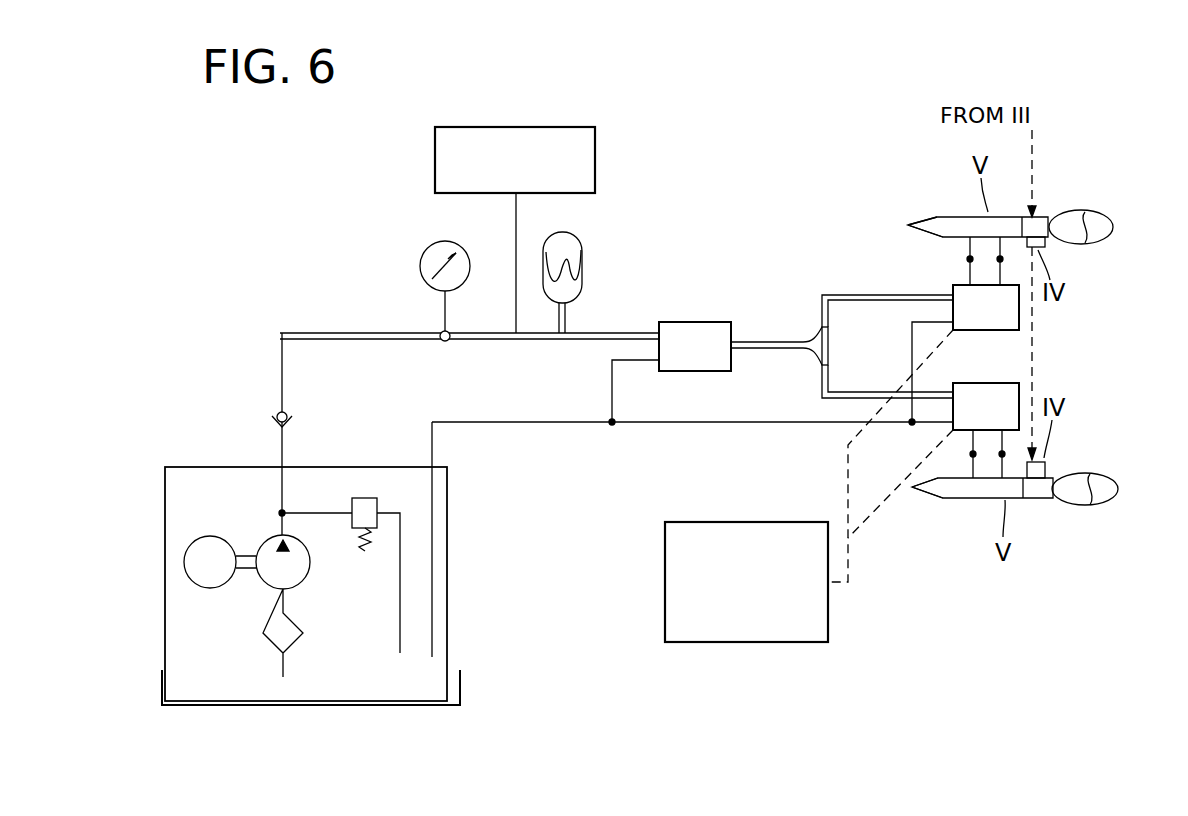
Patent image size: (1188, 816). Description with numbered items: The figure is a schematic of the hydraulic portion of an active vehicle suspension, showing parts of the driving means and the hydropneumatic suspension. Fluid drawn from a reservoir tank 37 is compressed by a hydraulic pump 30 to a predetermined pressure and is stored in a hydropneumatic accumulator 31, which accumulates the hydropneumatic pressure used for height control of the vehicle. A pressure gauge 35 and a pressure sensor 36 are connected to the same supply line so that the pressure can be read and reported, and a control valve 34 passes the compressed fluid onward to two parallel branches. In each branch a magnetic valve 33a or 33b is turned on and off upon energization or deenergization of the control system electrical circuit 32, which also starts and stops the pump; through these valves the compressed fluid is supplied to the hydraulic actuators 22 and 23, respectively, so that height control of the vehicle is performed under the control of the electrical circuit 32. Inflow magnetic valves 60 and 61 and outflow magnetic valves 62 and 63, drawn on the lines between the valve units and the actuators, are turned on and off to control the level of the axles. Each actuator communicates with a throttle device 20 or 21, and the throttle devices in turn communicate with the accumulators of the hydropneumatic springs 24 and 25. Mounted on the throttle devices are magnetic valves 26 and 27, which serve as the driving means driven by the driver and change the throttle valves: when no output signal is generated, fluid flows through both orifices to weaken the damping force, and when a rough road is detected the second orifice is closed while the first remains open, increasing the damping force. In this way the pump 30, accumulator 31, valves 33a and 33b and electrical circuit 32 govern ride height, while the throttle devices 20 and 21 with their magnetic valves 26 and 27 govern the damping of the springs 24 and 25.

The throttle device 20 is at (1050, 225).
The throttle device 21 is at (1060, 500).
The hydraulic actuator 22 is at (950, 217).
The hydraulic actuator 23 is at (965, 498).
The hydropneumatic spring 24 is at (1113, 212).
The hydropneumatic spring 25 is at (1118, 482).
The magnetic valve 26 is at (1046, 243).
The magnetic valve 27 is at (1047, 470).
The hydraulic pump 30 is at (272, 540).
The hydropneumatic accumulator 31 is at (585, 238).
The control system electrical circuit 32 is at (665, 580).
The magnetic valve 33a is at (986, 307).
The magnetic valve 33b is at (986, 406).
The control valve 34 is at (696, 322).
The pressure gauge 35 is at (421, 257).
The pressure sensor 36 is at (596, 157).
The reservoir tank 37 is at (462, 673).
The inflow magnetic valve 60 is at (968, 259).
The inflow magnetic valve 61 is at (971, 454).
The outflow magnetic valve 62 is at (998, 259).
The outflow magnetic valve 63 is at (1000, 454).